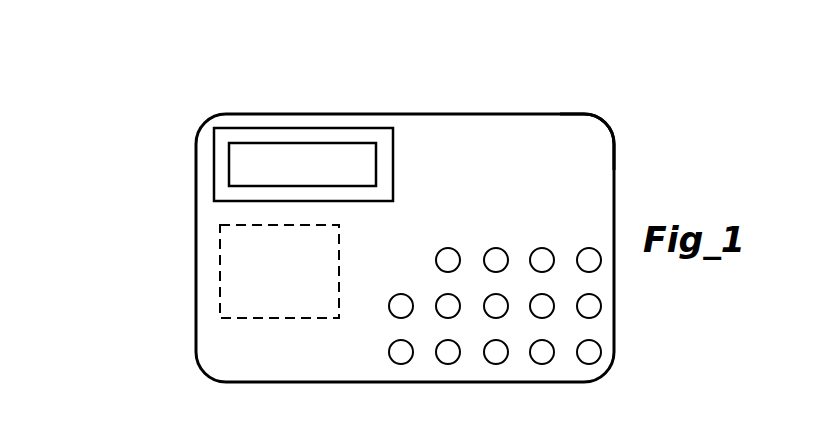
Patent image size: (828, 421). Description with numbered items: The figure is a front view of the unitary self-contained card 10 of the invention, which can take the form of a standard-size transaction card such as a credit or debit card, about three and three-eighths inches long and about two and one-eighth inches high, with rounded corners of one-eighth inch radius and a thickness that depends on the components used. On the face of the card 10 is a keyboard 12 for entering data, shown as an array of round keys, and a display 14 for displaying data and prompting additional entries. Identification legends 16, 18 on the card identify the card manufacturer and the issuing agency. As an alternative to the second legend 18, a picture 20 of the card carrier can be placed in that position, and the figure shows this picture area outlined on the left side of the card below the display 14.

The unitary self-contained card 10 is at (614, 192).
The keyboard 12 is at (590, 331).
The display 14 is at (280, 150).
The identification legend 16 is at (612, 134).
The identification legend 18 is at (222, 306).
The picture 20 is at (232, 268).